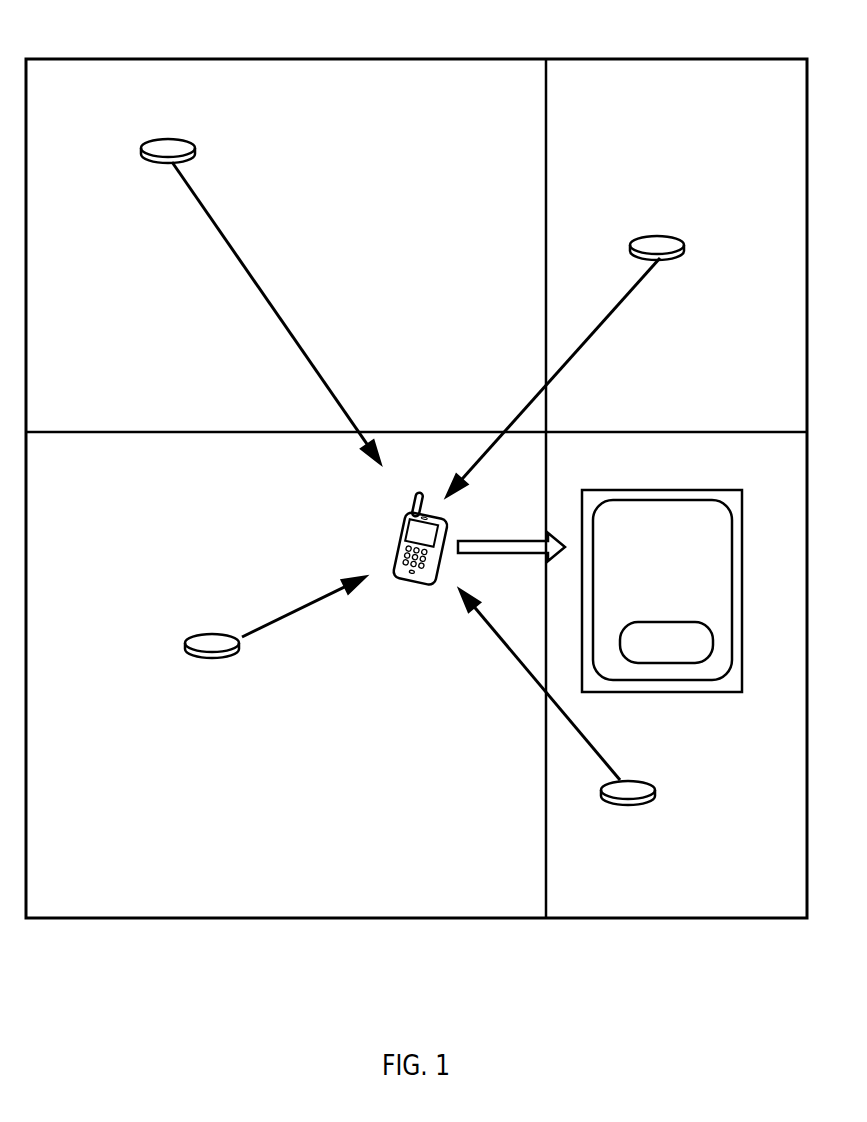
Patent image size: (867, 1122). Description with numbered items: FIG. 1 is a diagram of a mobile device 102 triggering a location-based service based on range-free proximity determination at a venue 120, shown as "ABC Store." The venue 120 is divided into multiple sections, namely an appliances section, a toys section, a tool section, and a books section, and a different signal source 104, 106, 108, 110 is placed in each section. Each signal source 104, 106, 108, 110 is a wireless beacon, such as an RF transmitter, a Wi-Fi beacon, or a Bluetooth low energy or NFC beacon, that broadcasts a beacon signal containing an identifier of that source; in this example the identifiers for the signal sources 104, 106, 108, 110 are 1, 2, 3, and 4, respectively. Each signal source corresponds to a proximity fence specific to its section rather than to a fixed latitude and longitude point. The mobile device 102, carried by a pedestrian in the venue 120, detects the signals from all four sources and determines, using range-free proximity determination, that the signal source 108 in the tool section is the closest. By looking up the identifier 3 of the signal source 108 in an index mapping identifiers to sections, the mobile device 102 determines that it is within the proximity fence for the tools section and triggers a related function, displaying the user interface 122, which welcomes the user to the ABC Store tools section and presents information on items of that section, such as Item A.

The venue 120 is at (193, 59).
The mobile device 102 is at (397, 528).
The signal source 104 is at (197, 151).
The signal source 106 is at (657, 237).
The signal source 108 is at (188, 651).
The signal source 110 is at (655, 792).
The user interface 122 is at (687, 490).
The identifier 1 is at (218, 131).
The identifier 2 is at (639, 210).
The identifier 3 is at (188, 653).
The identifier 4 is at (656, 785).